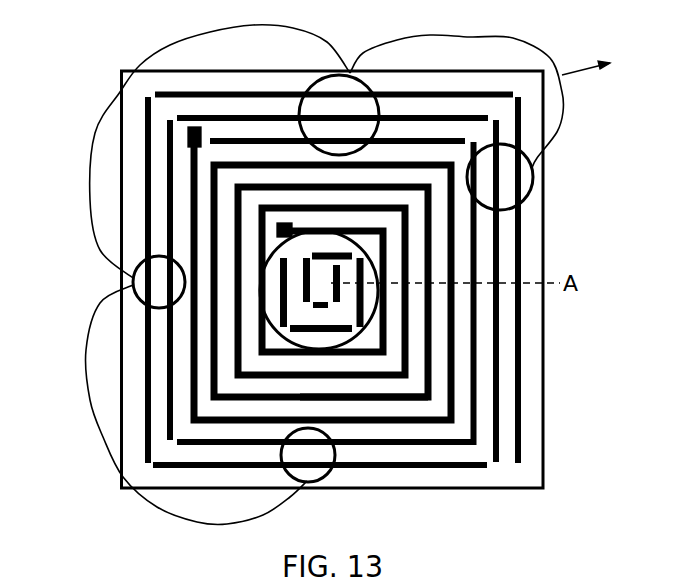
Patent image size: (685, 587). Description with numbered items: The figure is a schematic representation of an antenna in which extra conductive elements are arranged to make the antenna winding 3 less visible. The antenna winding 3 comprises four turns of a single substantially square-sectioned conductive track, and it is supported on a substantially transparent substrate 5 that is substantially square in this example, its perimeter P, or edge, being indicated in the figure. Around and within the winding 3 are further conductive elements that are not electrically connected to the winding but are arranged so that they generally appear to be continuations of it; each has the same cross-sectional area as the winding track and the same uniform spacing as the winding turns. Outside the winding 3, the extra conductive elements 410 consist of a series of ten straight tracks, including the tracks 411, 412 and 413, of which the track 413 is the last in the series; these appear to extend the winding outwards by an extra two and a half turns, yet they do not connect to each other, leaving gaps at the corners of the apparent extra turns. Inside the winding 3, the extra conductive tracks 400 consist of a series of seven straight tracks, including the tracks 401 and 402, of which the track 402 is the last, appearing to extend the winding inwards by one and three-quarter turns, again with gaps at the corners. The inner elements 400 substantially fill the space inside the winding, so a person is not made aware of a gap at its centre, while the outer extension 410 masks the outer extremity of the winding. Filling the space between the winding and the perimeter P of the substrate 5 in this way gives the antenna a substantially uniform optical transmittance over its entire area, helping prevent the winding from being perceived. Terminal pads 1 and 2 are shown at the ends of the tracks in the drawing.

The perimeter P is at (126, 70).
The substrate 5 is at (376, 246).
The first terminal pad 1 is at (188, 134).
The second terminal pad 2 is at (277, 232).
The antenna winding 3 is at (408, 398).
The extra conductive tracks inside the winding 400 is at (342, 310).
The extra conductive element 401 is at (358, 333).
The extra conductive element 402 is at (337, 303).
The extra conductive elements outside the winding 410 is at (562, 115).
The extra conductive element 411 is at (477, 383).
The extra conductive element 412 is at (498, 417).
The extra conductive element 413 is at (522, 450).